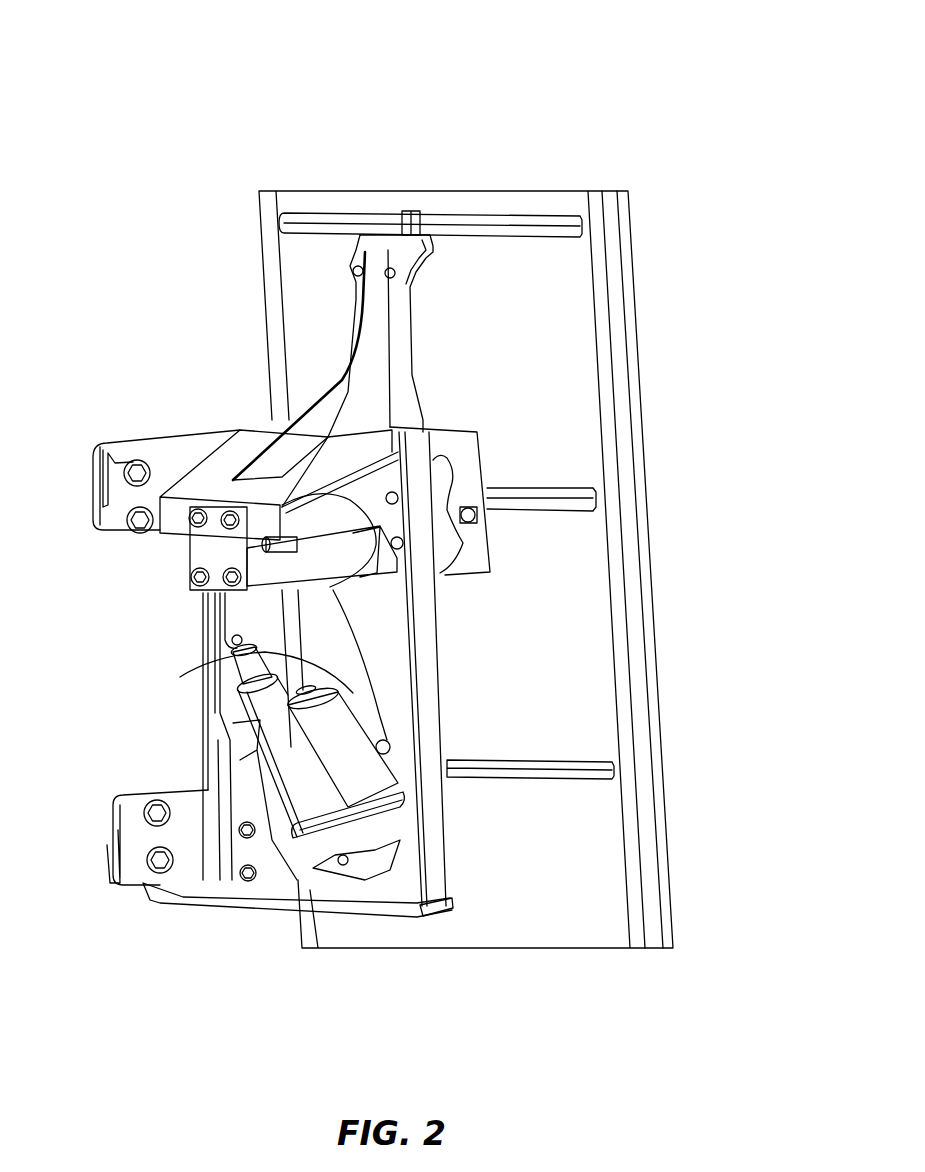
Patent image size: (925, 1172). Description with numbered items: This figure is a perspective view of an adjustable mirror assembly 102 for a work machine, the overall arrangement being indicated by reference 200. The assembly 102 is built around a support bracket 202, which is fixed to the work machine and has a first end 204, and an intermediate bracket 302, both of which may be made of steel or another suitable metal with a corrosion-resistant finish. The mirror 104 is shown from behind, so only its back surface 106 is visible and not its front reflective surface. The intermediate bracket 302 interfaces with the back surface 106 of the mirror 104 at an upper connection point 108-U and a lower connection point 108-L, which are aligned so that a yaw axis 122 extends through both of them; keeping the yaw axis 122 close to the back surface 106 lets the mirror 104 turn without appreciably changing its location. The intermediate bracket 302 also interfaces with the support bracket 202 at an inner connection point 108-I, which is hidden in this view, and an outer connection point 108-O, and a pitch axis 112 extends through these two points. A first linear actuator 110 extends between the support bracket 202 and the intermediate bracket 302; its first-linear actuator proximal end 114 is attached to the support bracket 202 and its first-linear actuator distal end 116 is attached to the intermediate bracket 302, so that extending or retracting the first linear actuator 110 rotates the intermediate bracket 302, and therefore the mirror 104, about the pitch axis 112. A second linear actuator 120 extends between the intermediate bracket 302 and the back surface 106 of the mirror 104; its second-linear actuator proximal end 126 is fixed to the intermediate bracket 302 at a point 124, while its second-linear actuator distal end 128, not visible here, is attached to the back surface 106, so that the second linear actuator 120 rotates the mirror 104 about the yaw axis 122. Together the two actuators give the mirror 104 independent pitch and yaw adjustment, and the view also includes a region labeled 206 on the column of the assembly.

The latch assembly 200 is at (120, 52).
The adjustable mirror assembly 102 is at (218, 173).
The mirror 104 is at (615, 285).
The back surface 106 is at (628, 367).
The upper connection point 108-U is at (452, 253).
The inner connection point 108-I is at (232, 420).
The outer connection point 108-O is at (487, 518).
The lower connection point 108-L is at (446, 766).
The first linear actuator 110 is at (263, 717).
The pitch axis 112 is at (477, 515).
The first-linear actuator proximal end 114 is at (260, 903).
The first-linear actuator distal end 116 is at (247, 650).
The second linear actuator 120 is at (313, 540).
The yaw axis 122 is at (409, 233).
The point 124 is at (203, 547).
The second-linear actuator proximal end 126 is at (376, 528).
The second-linear actuator distal end 128 is at (358, 488).
The support bracket 202 is at (102, 530).
The first end 204 is at (446, 895).
The column bracket 206 is at (478, 433).
The intermediate bracket 302 is at (208, 463).